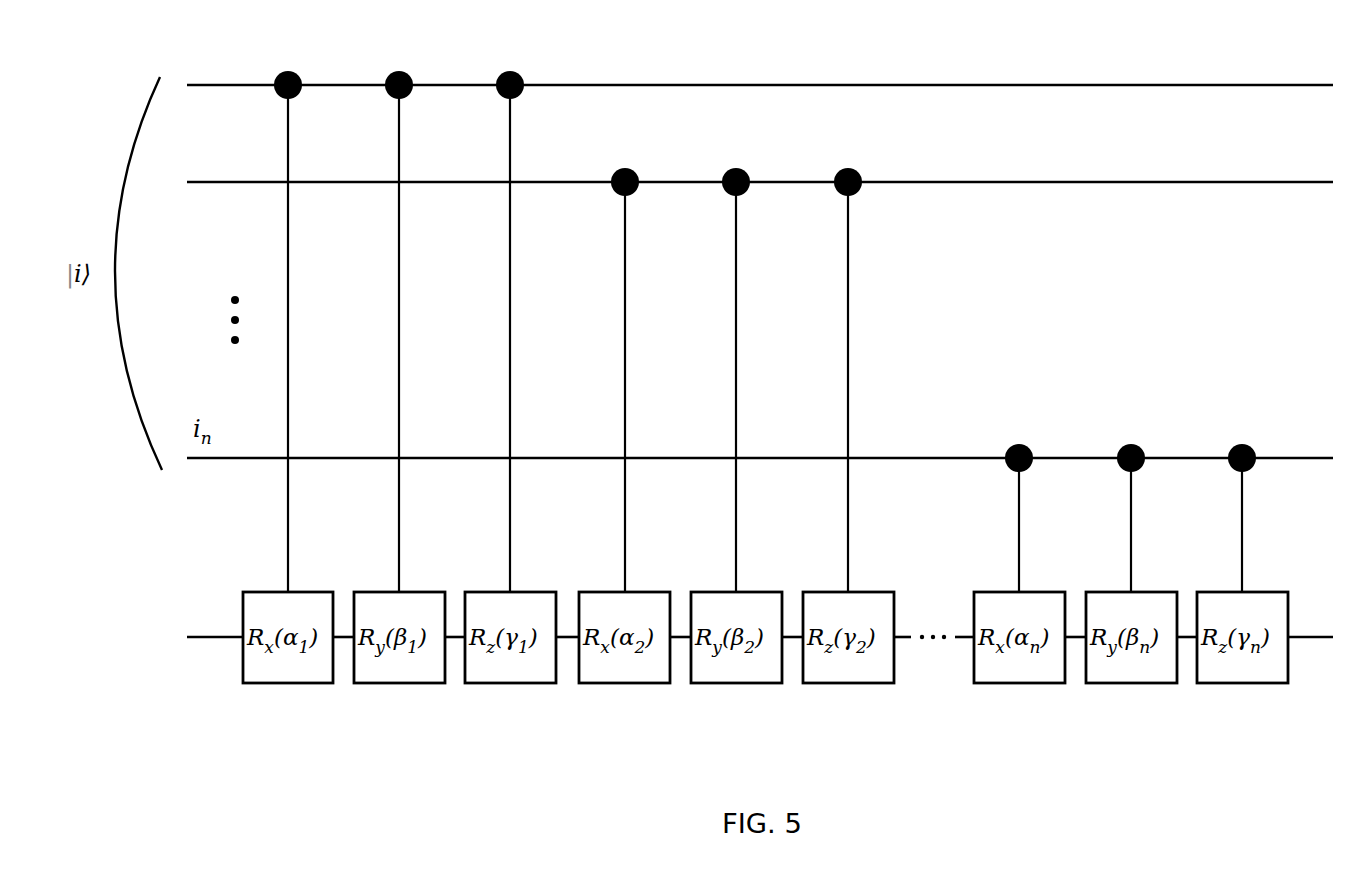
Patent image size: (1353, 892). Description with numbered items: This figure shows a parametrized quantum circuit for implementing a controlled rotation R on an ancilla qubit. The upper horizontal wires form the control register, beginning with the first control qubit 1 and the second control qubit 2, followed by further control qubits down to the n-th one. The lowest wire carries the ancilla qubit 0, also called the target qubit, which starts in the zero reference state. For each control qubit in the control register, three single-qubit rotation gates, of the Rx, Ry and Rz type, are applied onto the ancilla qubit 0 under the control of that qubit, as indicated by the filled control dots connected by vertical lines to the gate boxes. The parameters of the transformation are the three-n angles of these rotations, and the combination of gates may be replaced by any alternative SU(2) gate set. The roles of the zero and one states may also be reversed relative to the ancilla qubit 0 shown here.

The first control qubit i1 1 is at (760, 65).
The second control qubit i2 2 is at (760, 164).
The ancilla qubit | 0 is at (727, 637).